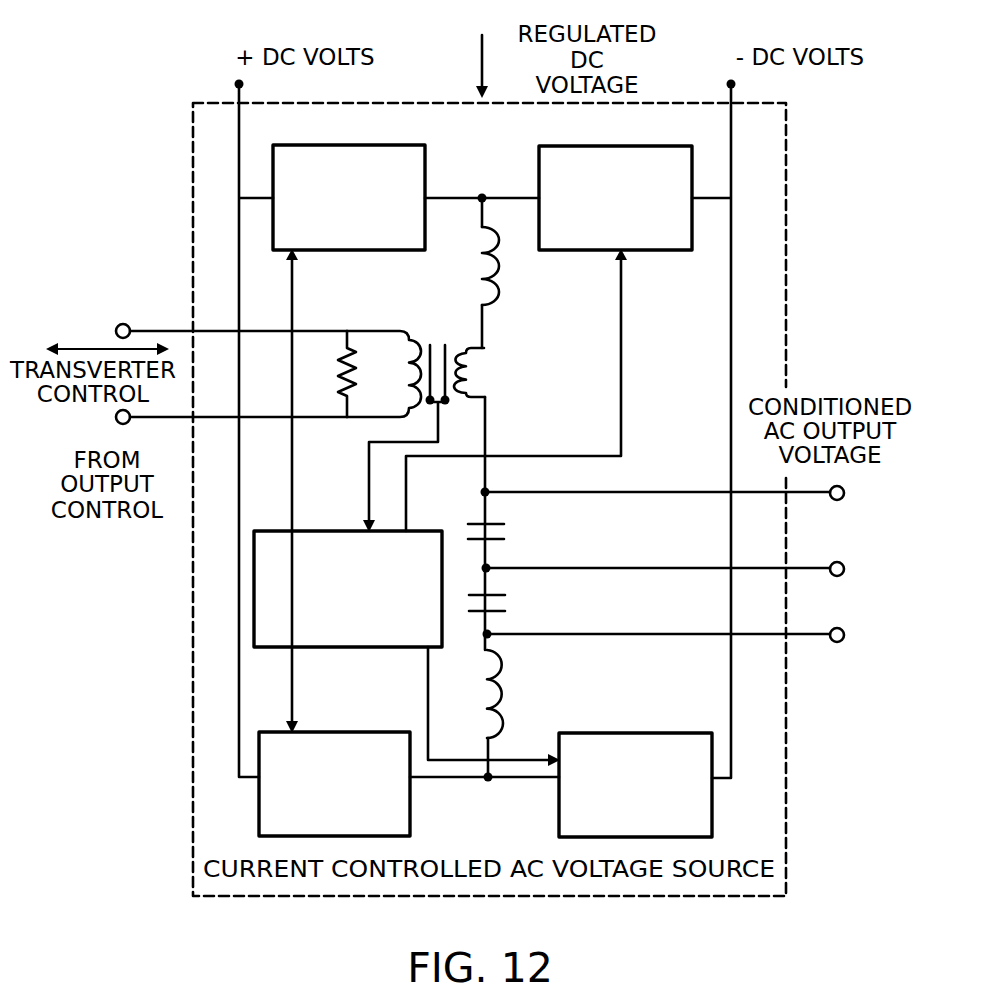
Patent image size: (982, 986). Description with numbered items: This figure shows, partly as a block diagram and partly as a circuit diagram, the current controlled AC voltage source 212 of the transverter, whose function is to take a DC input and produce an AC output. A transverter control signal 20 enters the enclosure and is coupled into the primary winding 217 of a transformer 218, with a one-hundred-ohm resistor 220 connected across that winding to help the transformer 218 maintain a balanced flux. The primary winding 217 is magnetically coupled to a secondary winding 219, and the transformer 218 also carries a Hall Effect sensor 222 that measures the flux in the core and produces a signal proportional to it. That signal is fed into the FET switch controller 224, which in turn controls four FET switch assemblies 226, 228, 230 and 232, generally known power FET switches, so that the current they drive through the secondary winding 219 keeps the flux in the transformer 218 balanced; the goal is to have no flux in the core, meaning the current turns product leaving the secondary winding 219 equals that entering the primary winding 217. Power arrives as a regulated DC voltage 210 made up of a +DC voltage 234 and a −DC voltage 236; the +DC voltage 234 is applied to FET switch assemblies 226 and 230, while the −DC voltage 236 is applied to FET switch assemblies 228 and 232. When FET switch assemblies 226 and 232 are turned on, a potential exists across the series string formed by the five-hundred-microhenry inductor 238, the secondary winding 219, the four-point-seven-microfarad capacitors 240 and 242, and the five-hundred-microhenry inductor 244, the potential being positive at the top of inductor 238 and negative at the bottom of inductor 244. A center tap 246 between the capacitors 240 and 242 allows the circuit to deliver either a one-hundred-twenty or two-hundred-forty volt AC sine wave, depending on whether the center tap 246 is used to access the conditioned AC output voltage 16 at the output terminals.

The conditioned AC output voltage 16 is at (856, 513).
The transverter control signal 20 is at (72, 347).
The regulated DC voltage 210 is at (478, 78).
The current controlled AC voltage source 212 is at (193, 766).
The primary winding 217 is at (406, 372).
The transformer 218 is at (435, 328).
The secondary winding 219 is at (465, 372).
The resistor 220 is at (340, 374).
The Hall Effect sensor 222 is at (450, 404).
The FET switch controller 224 is at (332, 648).
The FET switch assembly 226 is at (335, 145).
The FET switch assembly 228 is at (600, 146).
The FET switch assembly 230 is at (328, 732).
The FET switch assembly 232 is at (620, 733).
The +DC voltage 234 is at (246, 84).
The −DC voltage 236 is at (738, 84).
The inductor 238 is at (500, 270).
The capacitor 240 is at (506, 530).
The capacitor 242 is at (506, 604).
The inductor 244 is at (503, 695).
The center tap 246 is at (492, 567).